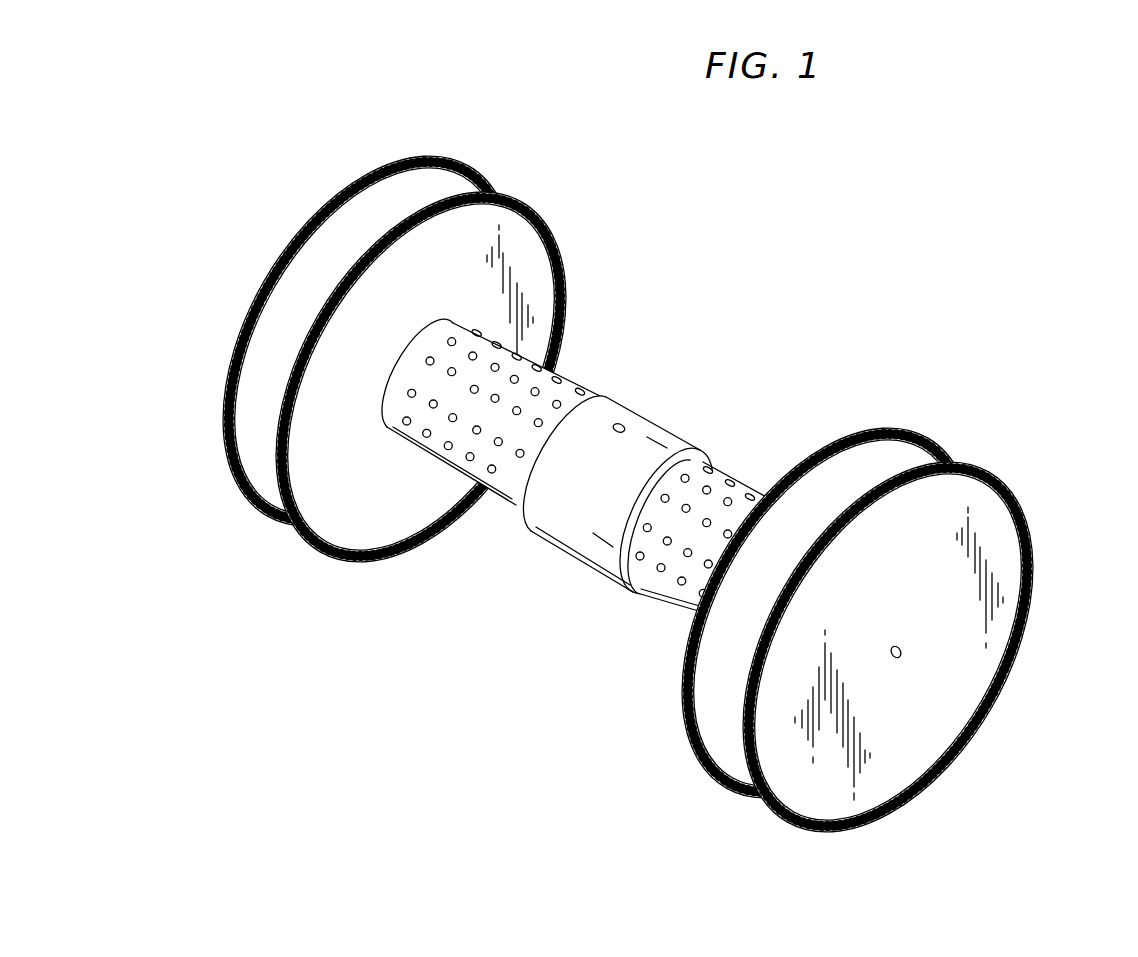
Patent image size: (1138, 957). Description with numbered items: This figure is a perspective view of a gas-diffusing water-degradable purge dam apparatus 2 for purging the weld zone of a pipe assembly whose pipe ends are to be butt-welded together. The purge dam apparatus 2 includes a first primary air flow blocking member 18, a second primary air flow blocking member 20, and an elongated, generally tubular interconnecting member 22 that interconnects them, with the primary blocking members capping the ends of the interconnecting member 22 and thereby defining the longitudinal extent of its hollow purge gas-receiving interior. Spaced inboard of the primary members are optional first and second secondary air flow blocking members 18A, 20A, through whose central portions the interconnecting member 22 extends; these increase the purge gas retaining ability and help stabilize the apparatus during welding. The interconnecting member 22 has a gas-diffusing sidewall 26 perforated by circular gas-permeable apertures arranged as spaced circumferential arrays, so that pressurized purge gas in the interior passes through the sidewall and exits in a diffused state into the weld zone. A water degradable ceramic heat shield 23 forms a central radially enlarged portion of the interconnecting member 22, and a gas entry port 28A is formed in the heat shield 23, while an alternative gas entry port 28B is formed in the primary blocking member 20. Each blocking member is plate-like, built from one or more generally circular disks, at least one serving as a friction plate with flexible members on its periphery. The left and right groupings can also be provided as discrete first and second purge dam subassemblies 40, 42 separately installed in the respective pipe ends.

The purge dam apparatus 2 is at (770, 186).
The first primary air flow blocking member 18 is at (440, 188).
The first secondary air flow blocking member 18A is at (510, 225).
The second primary air flow blocking member 20 is at (1017, 522).
The second secondary air flow blocking member 20A is at (925, 455).
The interconnecting member 22 is at (636, 417).
The water degradable ceramic heat shield 23 is at (657, 440).
The gas-diffusing sidewall 26 is at (508, 468).
The gas entry port 28A is at (619, 424).
The gas entry port 28B is at (898, 658).
The first purge dam subassembly 40 is at (541, 113).
The second purge dam subassembly 42 is at (1076, 417).